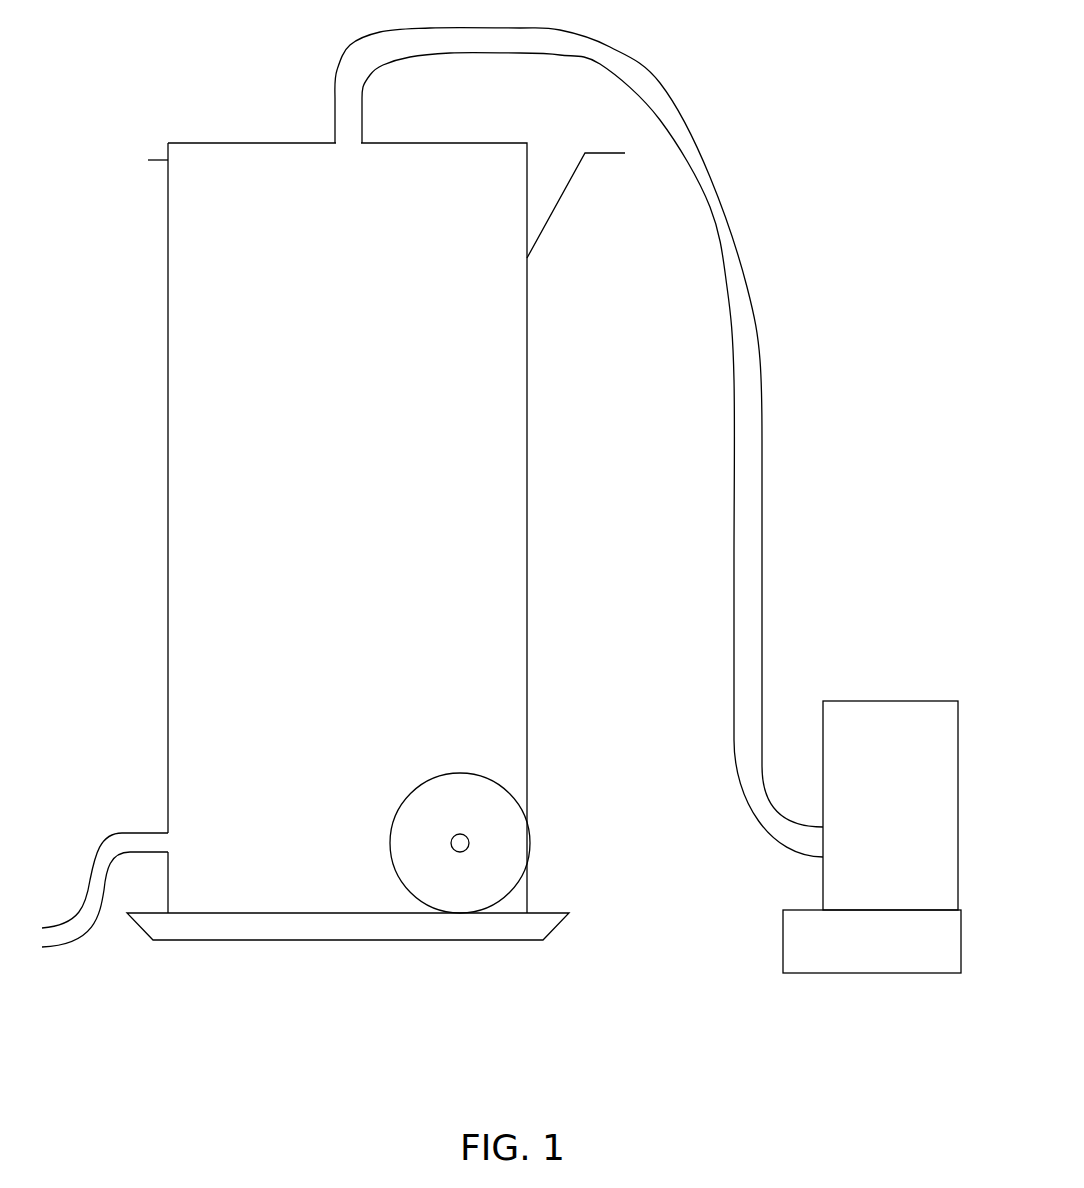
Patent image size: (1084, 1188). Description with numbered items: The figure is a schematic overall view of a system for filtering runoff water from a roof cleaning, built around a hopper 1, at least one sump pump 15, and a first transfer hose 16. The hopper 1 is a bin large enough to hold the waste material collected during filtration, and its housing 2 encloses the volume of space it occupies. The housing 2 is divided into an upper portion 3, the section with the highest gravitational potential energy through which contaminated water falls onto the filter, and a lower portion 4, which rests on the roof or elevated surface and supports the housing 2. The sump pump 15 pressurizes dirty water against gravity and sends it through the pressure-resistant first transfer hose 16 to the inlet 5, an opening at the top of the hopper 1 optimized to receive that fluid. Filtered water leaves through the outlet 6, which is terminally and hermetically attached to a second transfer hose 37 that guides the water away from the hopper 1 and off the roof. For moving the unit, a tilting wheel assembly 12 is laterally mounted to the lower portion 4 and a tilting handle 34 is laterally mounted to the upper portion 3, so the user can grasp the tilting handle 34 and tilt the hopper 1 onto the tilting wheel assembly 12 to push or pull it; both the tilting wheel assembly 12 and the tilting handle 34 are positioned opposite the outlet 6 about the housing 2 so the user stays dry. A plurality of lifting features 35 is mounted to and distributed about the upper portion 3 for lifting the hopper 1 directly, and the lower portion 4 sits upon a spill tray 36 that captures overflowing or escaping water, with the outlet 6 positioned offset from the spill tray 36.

The hopper 1 is at (230, 63).
The housing 2 is at (355, 475).
The upper portion 3 is at (197, 224).
The lower portion 4 is at (267, 856).
The inlet 5 is at (355, 165).
The outlet 6 is at (175, 841).
The tilting wheel assembly 12 is at (517, 832).
The sump pump 15 is at (908, 820).
The first transfer hose 16 is at (718, 227).
The tilting handle 34 is at (605, 153).
The lifting features 35 is at (150, 160).
The spill tray 36 is at (345, 932).
The second transfer hose 37 is at (108, 847).